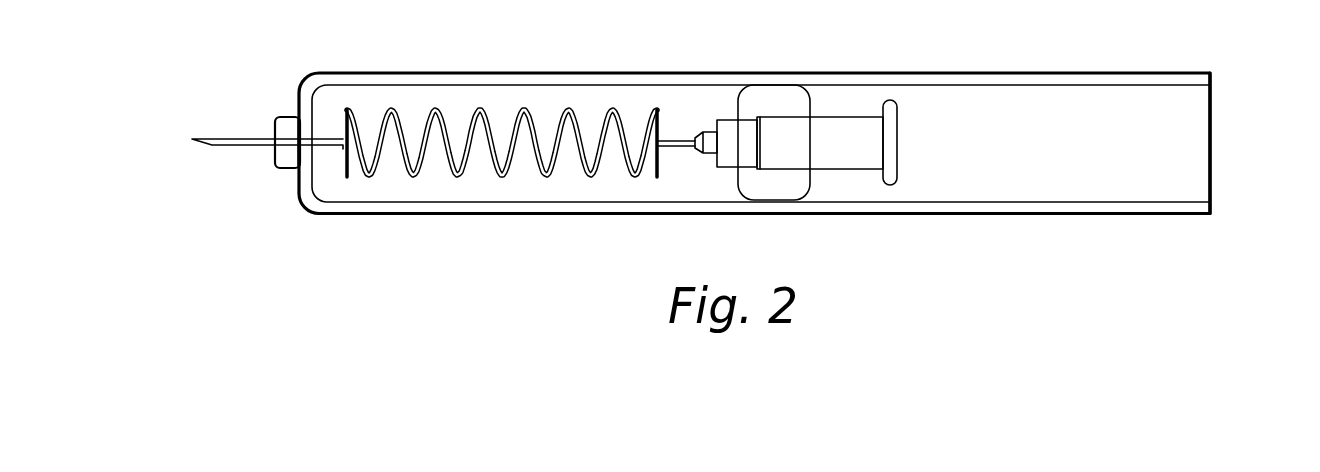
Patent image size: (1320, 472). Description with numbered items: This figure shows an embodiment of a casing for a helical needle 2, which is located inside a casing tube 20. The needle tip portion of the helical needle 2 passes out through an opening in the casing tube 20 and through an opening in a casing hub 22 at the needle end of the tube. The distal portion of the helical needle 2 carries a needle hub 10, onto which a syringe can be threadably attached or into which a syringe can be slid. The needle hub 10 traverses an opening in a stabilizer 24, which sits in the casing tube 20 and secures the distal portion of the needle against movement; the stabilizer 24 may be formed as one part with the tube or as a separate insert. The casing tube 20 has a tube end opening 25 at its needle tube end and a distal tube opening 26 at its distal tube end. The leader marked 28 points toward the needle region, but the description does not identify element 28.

The helical needle 2 is at (212, 139).
The needle hub 10 is at (842, 137).
The casing tube 20 is at (595, 214).
The casing hub 22 is at (285, 161).
The stabilizer 24 is at (775, 185).
The tube end opening 25 is at (306, 171).
The distal tube opening 26 is at (1226, 133).
The needle 28 is at (252, 117).